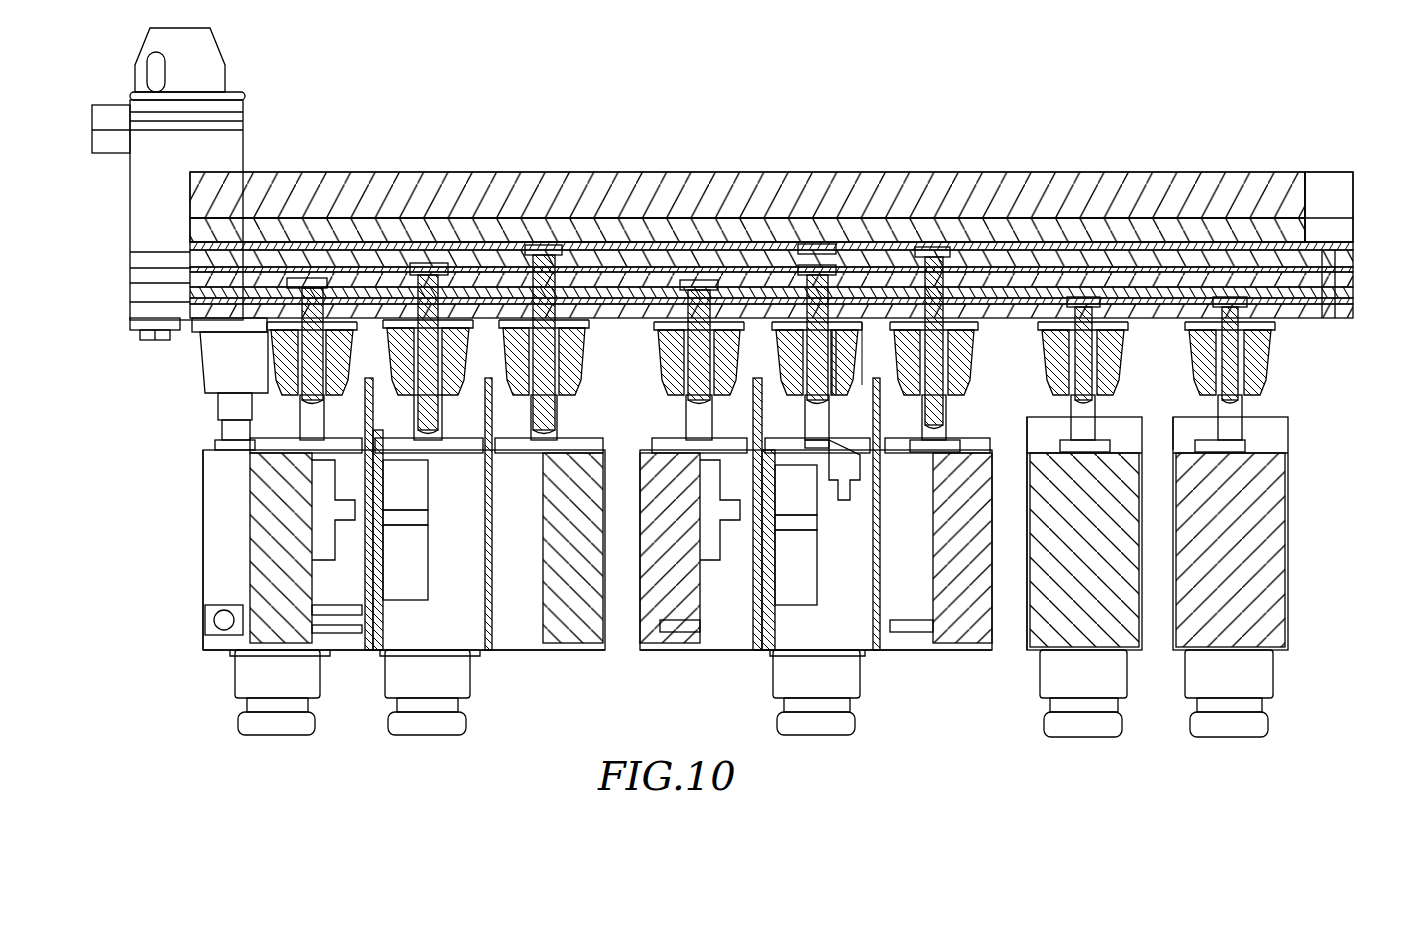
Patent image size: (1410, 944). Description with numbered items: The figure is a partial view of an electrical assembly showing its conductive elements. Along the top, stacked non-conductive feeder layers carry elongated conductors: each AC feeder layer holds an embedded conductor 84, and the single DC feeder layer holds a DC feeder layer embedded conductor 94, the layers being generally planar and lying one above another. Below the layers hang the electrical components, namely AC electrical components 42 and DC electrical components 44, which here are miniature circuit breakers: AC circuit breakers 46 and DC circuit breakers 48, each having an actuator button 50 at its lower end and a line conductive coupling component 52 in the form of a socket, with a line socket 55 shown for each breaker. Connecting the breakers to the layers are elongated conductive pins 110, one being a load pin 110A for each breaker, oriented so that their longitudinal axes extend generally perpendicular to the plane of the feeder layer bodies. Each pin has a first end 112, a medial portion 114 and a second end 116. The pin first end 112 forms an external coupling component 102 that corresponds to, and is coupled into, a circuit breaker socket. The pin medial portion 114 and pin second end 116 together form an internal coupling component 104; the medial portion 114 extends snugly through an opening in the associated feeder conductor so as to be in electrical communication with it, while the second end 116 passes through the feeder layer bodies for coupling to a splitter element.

The AC electrical components 42 is at (333, 745).
The DC electrical components 44 is at (1175, 757).
The AC circuit breaker 46 is at (333, 640).
The DC circuit breaker 48 is at (1287, 535).
The actuator button 50 is at (812, 737).
The line conductive coupling component 52 is at (267, 385).
The line socket 55 is at (1260, 420).
The embedded conductor 84 is at (1353, 250).
The DC feeder layer embedded conductor 94 is at (1353, 318).
The external coupling component 102 is at (814, 400).
The internal coupling component 104 is at (850, 270).
The pin 110 is at (815, 360).
The load pin 110A is at (965, 312).
The pin first end 112 is at (820, 395).
The pin medial portion 114 is at (878, 305).
The pin second end 116 is at (812, 243).